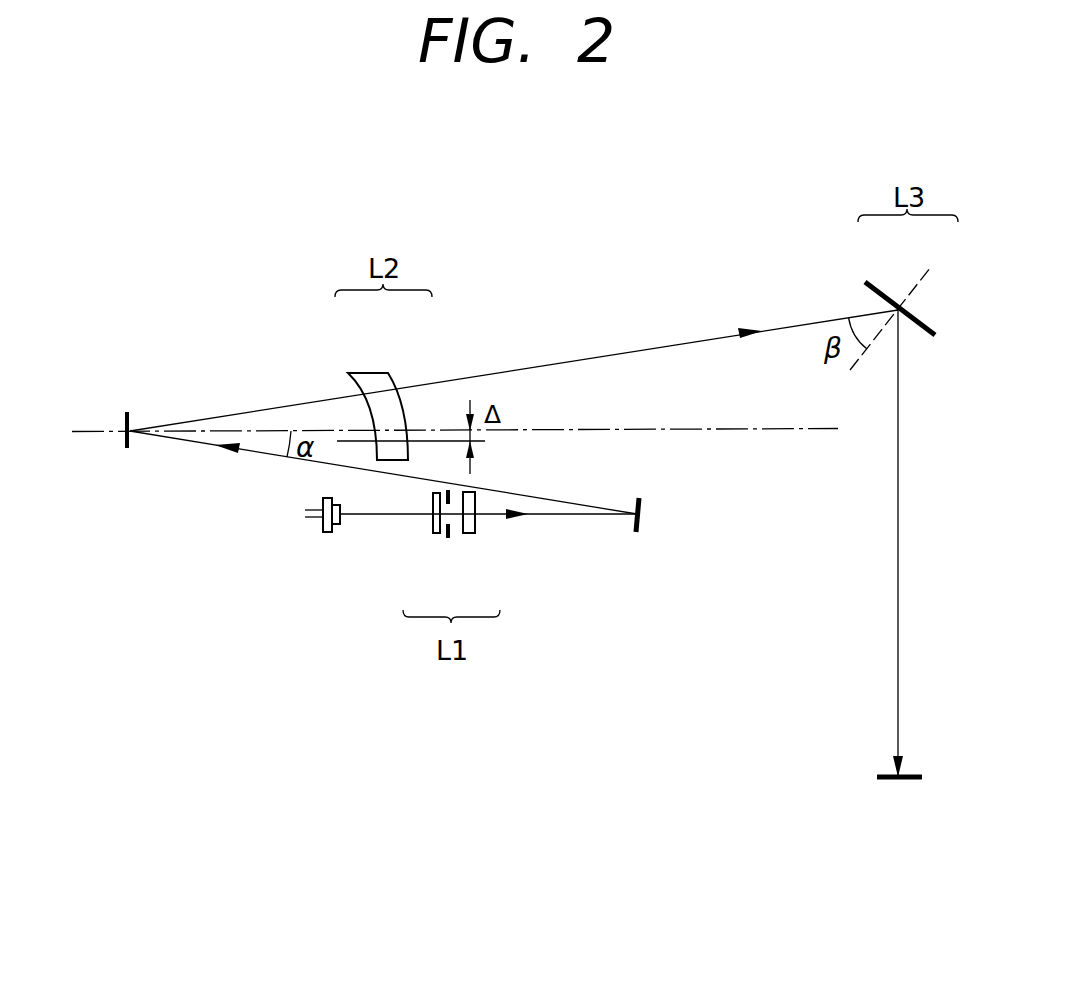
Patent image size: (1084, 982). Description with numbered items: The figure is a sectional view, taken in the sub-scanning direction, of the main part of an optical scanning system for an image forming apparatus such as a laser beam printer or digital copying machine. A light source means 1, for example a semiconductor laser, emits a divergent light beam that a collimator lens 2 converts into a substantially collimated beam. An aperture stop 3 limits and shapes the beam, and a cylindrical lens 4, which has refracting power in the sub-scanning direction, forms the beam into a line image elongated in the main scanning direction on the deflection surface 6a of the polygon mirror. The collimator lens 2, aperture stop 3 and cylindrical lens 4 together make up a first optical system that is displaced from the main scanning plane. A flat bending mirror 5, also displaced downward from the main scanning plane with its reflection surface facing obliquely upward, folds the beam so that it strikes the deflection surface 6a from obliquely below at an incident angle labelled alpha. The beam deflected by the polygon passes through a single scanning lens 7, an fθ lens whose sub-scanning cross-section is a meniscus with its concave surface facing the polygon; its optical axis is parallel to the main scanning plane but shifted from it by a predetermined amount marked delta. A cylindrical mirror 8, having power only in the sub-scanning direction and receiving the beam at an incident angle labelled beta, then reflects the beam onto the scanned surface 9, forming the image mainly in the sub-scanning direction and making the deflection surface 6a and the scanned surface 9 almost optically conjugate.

The light source means 1 is at (327, 534).
The collimator lens 2 is at (434, 536).
The aperture stop 3 is at (452, 540).
The cylindrical lens 4 is at (472, 536).
The bending mirror 5 is at (645, 500).
The deflection surface 6a is at (132, 412).
The scanning lens 7 is at (378, 372).
The cylindrical mirror 8 is at (878, 285).
The scanned surface 9 is at (888, 781).